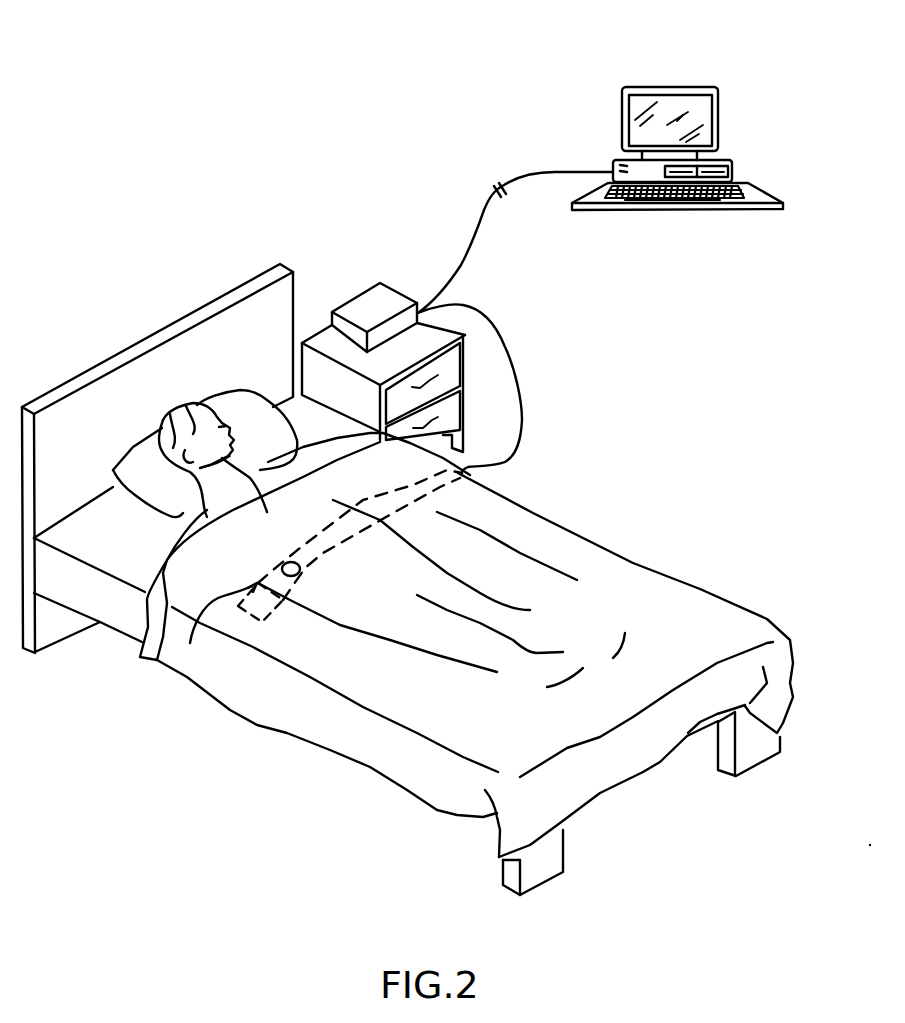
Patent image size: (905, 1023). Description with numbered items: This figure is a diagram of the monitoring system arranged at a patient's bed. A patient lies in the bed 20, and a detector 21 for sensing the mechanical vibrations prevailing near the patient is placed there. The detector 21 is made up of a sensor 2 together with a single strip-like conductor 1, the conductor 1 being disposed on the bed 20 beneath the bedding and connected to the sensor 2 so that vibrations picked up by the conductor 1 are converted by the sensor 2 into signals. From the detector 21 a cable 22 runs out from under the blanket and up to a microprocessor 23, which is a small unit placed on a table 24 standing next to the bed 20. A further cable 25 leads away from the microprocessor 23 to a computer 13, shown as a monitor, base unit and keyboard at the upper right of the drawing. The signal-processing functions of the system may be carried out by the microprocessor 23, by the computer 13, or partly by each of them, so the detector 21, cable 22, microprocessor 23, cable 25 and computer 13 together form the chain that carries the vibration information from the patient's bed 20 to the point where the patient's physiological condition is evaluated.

The conductor 1 is at (182, 672).
The sensor 2 is at (292, 576).
The computer 13 is at (658, 87).
The bed 20 is at (633, 597).
The detector 21 is at (327, 543).
The cable 22 is at (520, 410).
The microprocessor 23 is at (358, 302).
The table 24 is at (323, 340).
The cable 25 is at (572, 169).